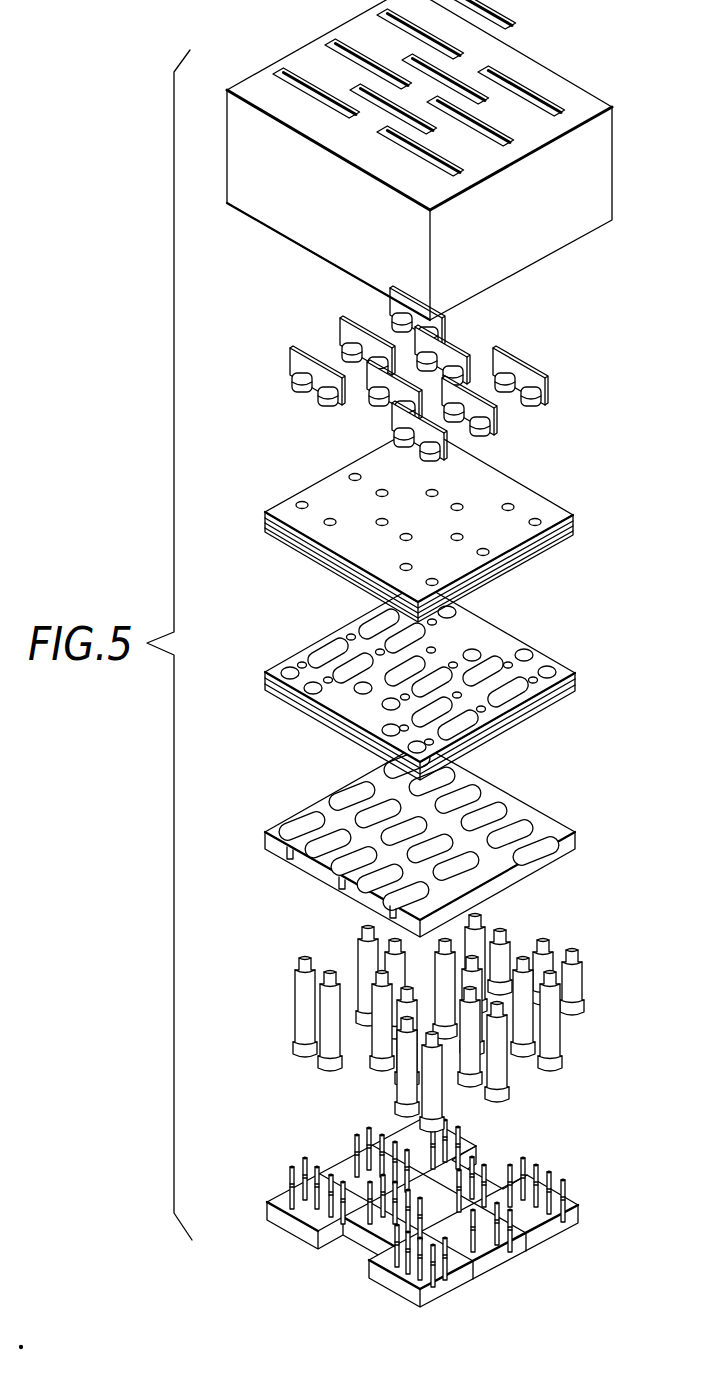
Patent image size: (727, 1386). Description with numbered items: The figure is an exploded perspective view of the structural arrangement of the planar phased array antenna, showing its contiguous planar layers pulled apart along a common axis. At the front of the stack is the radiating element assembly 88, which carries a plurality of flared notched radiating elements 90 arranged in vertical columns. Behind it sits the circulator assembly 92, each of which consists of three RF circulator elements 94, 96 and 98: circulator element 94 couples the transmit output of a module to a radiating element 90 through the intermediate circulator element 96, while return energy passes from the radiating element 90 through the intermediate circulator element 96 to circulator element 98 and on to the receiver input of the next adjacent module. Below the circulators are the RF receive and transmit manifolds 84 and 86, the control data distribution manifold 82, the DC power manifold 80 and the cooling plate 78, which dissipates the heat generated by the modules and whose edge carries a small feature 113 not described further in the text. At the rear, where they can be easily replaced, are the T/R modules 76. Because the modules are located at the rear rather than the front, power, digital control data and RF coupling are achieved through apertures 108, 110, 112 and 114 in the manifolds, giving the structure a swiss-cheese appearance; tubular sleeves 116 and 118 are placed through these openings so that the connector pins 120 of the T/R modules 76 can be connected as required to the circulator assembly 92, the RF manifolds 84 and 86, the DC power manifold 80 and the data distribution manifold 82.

The T/R module 76 is at (590, 1245).
The cooling plate 78 is at (436, 842).
The DC power manifold 80 is at (544, 727).
The control data distribution manifold 82 is at (435, 686).
The RF receive manifold 84 is at (422, 525).
The RF transmit manifold 86 is at (551, 560).
The radiating element assembly 88 is at (470, 160).
The flared notched radiating element 90 is at (322, 50).
The circulator assembly 92 is at (515, 330).
The circulator element 94 is at (289, 360).
The intermediate circulator element 96 is at (375, 405).
The circulator element 98 is at (398, 447).
The aperture 108 is at (298, 502).
The aperture 110 is at (454, 640).
The aperture 112 is at (343, 797).
The notch 113 is at (342, 885).
The aperture 114 is at (470, 790).
The tubular sleeve 116 is at (455, 1023).
The tubular sleeve 118 is at (585, 1000).
The connector pin 120 is at (356, 1143).